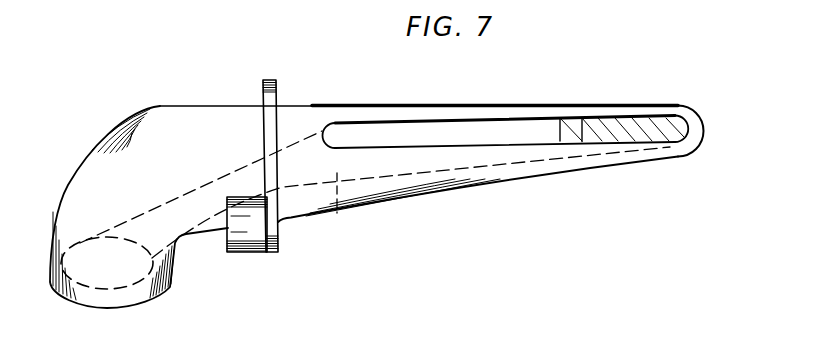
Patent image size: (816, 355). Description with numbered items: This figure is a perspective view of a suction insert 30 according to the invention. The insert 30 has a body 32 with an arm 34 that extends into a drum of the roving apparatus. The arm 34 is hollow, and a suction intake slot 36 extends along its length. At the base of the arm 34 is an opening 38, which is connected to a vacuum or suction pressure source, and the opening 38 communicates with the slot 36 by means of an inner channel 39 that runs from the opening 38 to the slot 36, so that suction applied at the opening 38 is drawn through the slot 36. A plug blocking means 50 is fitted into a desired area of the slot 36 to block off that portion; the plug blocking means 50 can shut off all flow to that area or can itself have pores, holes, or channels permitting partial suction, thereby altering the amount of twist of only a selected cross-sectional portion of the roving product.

The insert 30 is at (248, 253).
The body 32 is at (163, 118).
The arm 34 is at (550, 110).
The suction intake slot 36 is at (407, 130).
The opening 38 is at (117, 288).
The inner channel 39 is at (339, 210).
The plug blocking means 50 is at (654, 118).